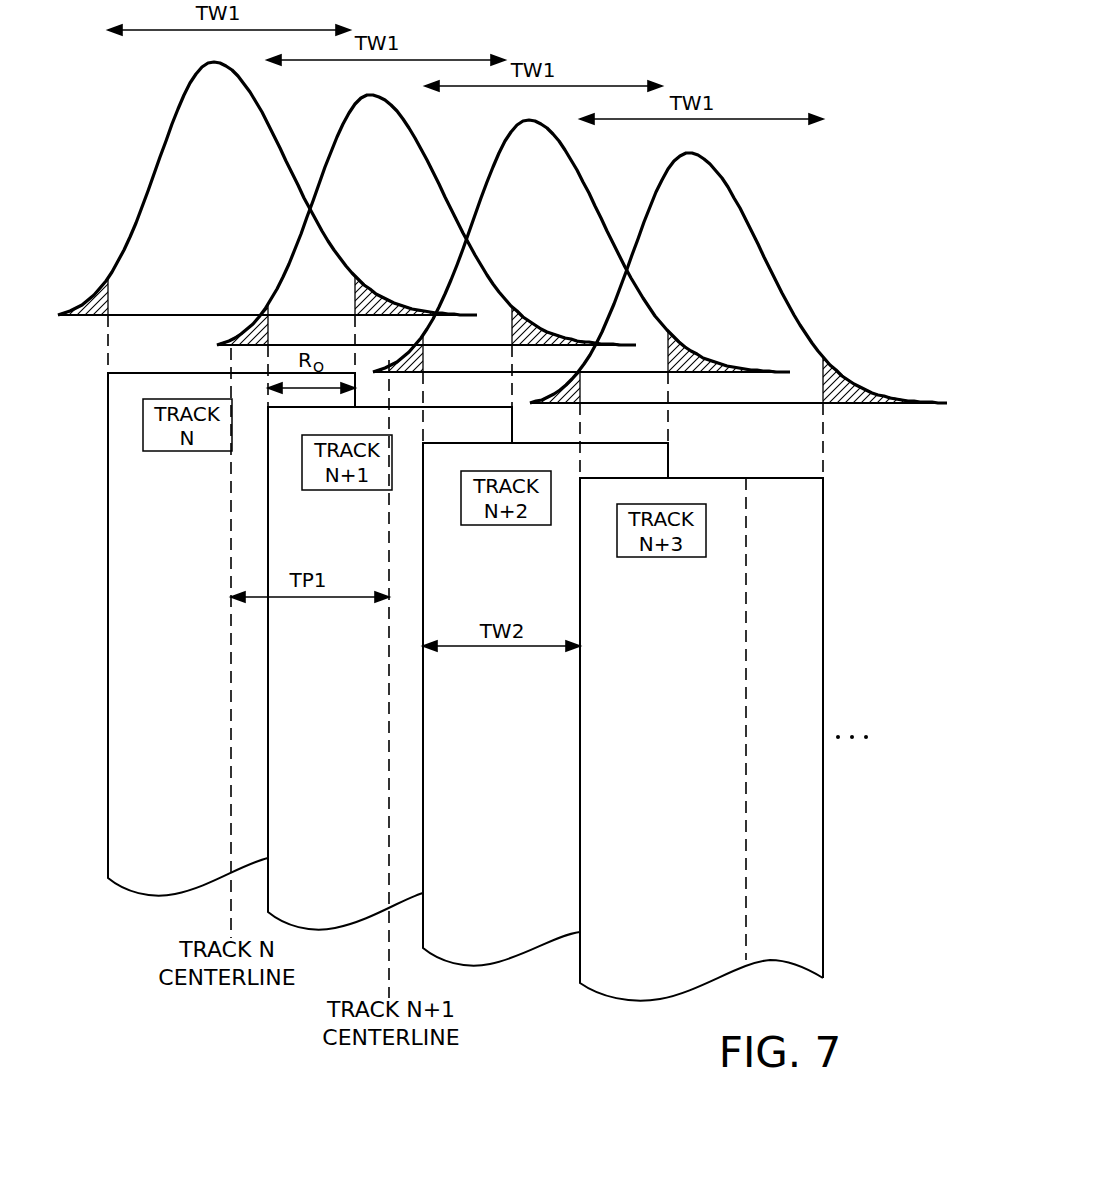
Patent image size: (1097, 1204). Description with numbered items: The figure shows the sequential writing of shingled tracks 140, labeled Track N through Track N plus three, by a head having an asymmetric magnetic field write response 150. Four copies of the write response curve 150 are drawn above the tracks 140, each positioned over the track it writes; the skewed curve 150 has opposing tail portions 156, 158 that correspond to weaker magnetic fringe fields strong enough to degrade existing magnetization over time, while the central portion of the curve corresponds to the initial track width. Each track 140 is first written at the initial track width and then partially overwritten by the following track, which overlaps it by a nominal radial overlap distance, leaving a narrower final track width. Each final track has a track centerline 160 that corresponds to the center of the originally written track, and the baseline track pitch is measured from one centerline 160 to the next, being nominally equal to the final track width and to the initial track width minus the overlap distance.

The shingled tracks 140 is at (494, 952).
The asymmetric magnetic field write response 150 is at (286, 158).
The tail portion 156 is at (96, 283).
The tail portion 158 is at (378, 284).
The track centerline 160 is at (233, 793).